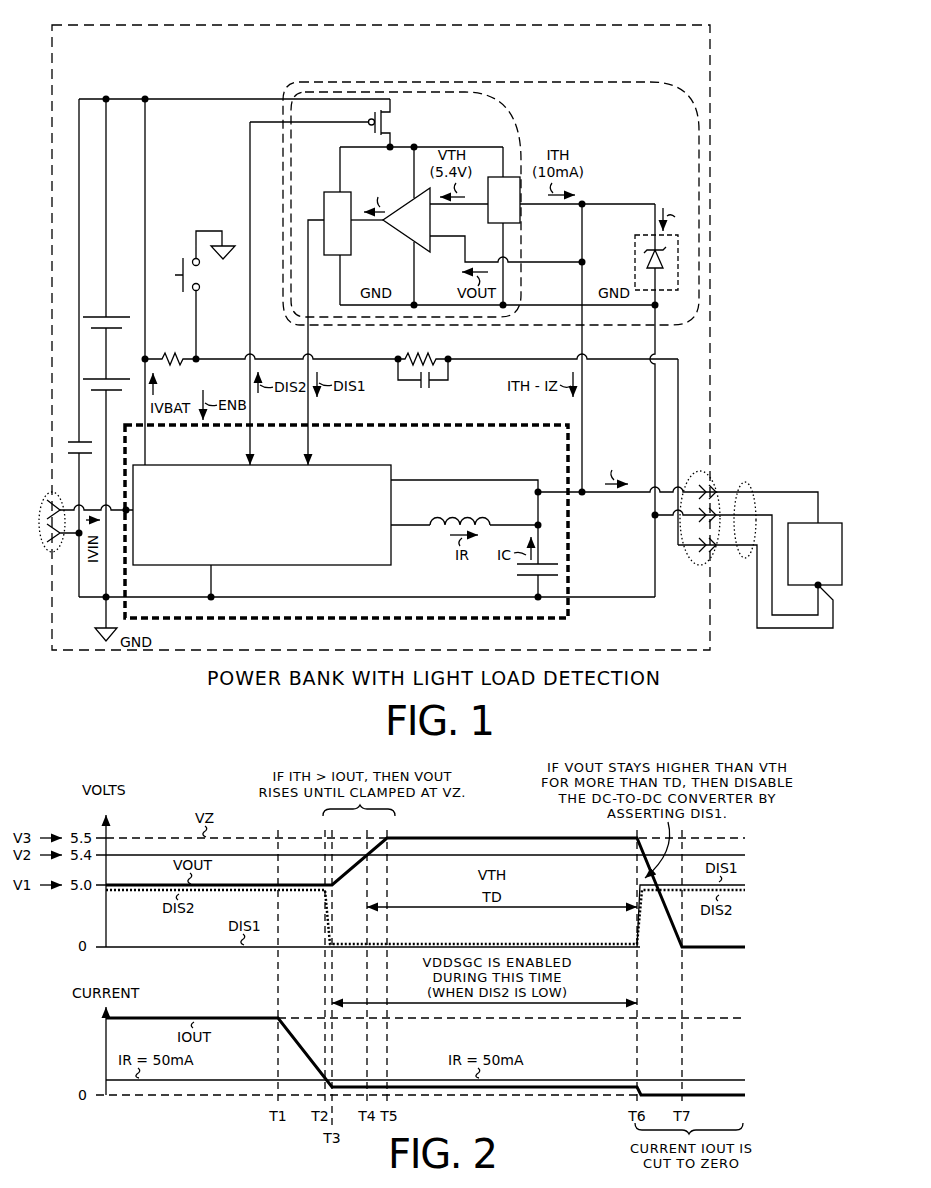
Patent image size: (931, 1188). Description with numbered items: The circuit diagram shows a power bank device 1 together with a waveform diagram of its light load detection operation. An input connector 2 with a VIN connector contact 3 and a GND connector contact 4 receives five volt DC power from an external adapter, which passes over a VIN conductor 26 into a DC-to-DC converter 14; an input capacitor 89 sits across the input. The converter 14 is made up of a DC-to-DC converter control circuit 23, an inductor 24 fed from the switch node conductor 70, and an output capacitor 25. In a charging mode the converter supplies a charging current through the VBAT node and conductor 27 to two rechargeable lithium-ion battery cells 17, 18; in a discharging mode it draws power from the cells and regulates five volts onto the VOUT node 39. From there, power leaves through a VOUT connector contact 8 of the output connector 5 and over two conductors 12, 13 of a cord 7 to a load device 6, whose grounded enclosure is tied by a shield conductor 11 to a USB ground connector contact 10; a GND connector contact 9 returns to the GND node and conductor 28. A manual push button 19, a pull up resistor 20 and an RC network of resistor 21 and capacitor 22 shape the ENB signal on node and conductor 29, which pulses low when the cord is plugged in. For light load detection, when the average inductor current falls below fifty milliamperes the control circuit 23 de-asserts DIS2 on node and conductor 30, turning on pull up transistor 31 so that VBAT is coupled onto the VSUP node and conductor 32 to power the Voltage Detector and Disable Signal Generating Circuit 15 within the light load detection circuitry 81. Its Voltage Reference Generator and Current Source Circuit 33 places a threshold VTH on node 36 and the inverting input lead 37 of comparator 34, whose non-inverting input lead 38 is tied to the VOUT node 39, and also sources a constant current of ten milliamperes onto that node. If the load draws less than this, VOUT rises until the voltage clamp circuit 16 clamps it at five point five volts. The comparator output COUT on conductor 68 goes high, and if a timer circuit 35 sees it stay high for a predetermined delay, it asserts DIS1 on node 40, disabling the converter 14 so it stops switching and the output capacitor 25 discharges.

The power bank device 1 is at (710, 106).
The input connector 2 is at (56, 550).
The VIN connector contact 3 is at (61, 498).
The GND connector contact 4 is at (59, 546).
The output connector 5 is at (717, 476).
The load device 6 is at (811, 568).
The cord 7 is at (763, 478).
The VOUT connector contact 8 is at (700, 480).
The GND connector contact 9 is at (702, 521).
The USB ground connector contact 10 is at (700, 553).
The shield conductor 11 is at (820, 629).
The conductor 12 is at (803, 490).
The conductor 13 is at (785, 621).
The DC-to-DC converter 14 is at (346, 521).
The Voltage Detector and Disable Signal Generating Circuit 15 is at (392, 91).
The voltage clamp circuit 16 is at (678, 262).
The battery cell 17 is at (95, 315).
The battery cell 18 is at (95, 378).
The manual push button 19 is at (177, 257).
The pull up resistor 20 is at (179, 352).
The resistor 21 is at (433, 353).
The capacitor 22 is at (433, 383).
The DC-to-DC converter control circuit 23 is at (262, 515).
The inductor 24 is at (469, 517).
The output capacitor 25 is at (518, 568).
The VIN conductor 26 is at (118, 508).
The VBAT node and conductor 27 is at (210, 101).
The GND node and conductor 28 is at (420, 596).
The ENB node and conductor 29 is at (345, 358).
The DIS2 node and conductor 30 is at (249, 315).
The pull up transistor 31 is at (391, 120).
The VSUP node and conductor 32 is at (481, 146).
The Voltage Reference Generator and Current Source Circuit 33 is at (507, 196).
The comparator 34 is at (406, 220).
The timer circuit 35 is at (322, 193).
The node 36 is at (475, 207).
The inverting input lead 37 is at (434, 206).
The non-inverting input lead 38 is at (432, 239).
The VOUT node 39 is at (612, 497).
The DIS1 node 40 is at (306, 330).
The comparator output conductor 68 is at (371, 220).
The switch node conductor 70 is at (414, 524).
The light load detection circuitry 81 is at (623, 83).
The input capacitor 89 is at (71, 441).